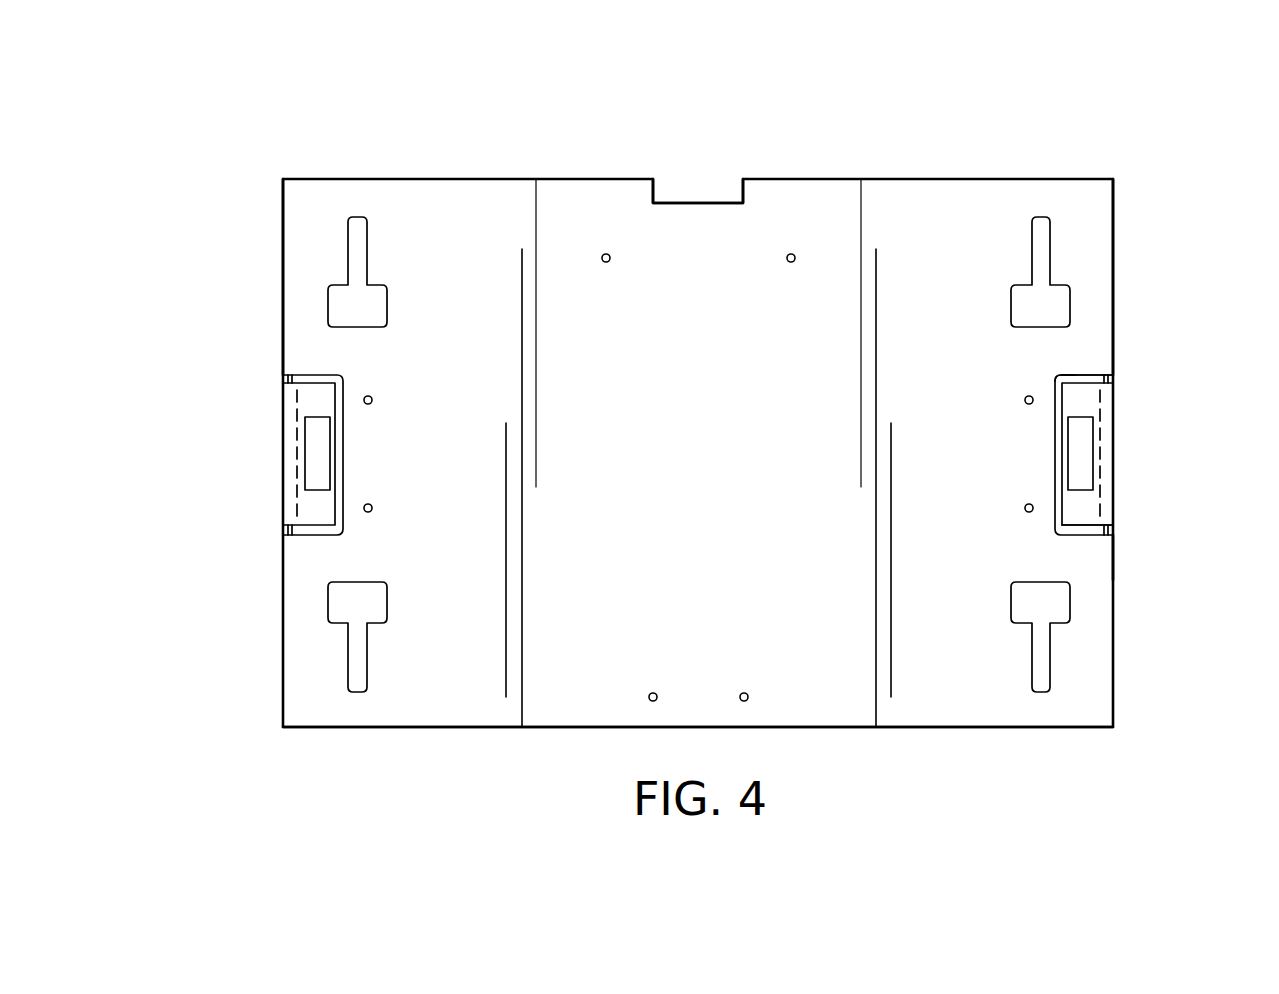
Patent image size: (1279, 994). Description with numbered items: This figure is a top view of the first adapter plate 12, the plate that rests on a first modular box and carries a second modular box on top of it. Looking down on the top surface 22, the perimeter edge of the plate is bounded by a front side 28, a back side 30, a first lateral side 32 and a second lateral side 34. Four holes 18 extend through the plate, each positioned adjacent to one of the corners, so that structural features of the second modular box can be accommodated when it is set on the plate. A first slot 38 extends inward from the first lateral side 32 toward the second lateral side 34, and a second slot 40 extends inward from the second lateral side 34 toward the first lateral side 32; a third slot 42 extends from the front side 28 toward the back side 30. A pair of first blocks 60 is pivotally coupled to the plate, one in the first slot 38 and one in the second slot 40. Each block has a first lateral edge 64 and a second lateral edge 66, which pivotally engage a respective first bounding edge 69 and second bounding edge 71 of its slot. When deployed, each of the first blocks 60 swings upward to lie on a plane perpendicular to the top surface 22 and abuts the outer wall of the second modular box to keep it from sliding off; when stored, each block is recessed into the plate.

The first adapter plate 12 is at (283, 178).
The holes 18 is at (358, 290).
The top surface 22 is at (565, 232).
The front side 28 is at (857, 179).
The third slot 42 is at (705, 203).
The first lateral side 32 is at (283, 333).
The second lateral side 34 is at (1115, 346).
The first slot 38 is at (343, 398).
The second slot 40 is at (1055, 432).
The first blocks 60 is at (283, 447).
The first lateral edge 64 is at (1113, 380).
The second lateral edge 66 is at (1096, 537).
The first bounding edge 69 is at (1078, 373).
The second bounding edge 71 is at (1083, 533).
The back side 30 is at (887, 728).